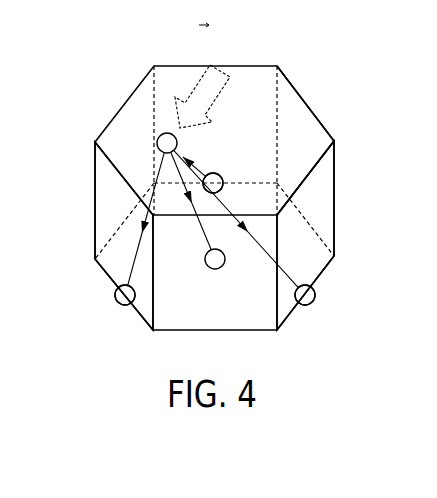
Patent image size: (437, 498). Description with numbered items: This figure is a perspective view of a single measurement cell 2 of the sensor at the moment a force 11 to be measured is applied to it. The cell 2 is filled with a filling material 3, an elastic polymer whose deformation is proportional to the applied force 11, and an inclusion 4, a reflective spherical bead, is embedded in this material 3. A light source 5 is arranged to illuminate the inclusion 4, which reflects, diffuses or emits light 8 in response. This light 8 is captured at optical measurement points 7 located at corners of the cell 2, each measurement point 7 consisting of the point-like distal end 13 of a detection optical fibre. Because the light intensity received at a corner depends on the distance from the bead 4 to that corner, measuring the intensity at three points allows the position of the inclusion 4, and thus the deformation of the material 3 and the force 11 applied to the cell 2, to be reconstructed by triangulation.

The cell 2 is at (355, 200).
The filling material 3 is at (303, 135).
The inclusion 4 is at (158, 139).
The light source 5 is at (213, 269).
The optical measurement point 7 is at (223, 181).
The light 8 is at (282, 80).
The force 11 is at (195, 90).
The distal end 13 is at (215, 239).